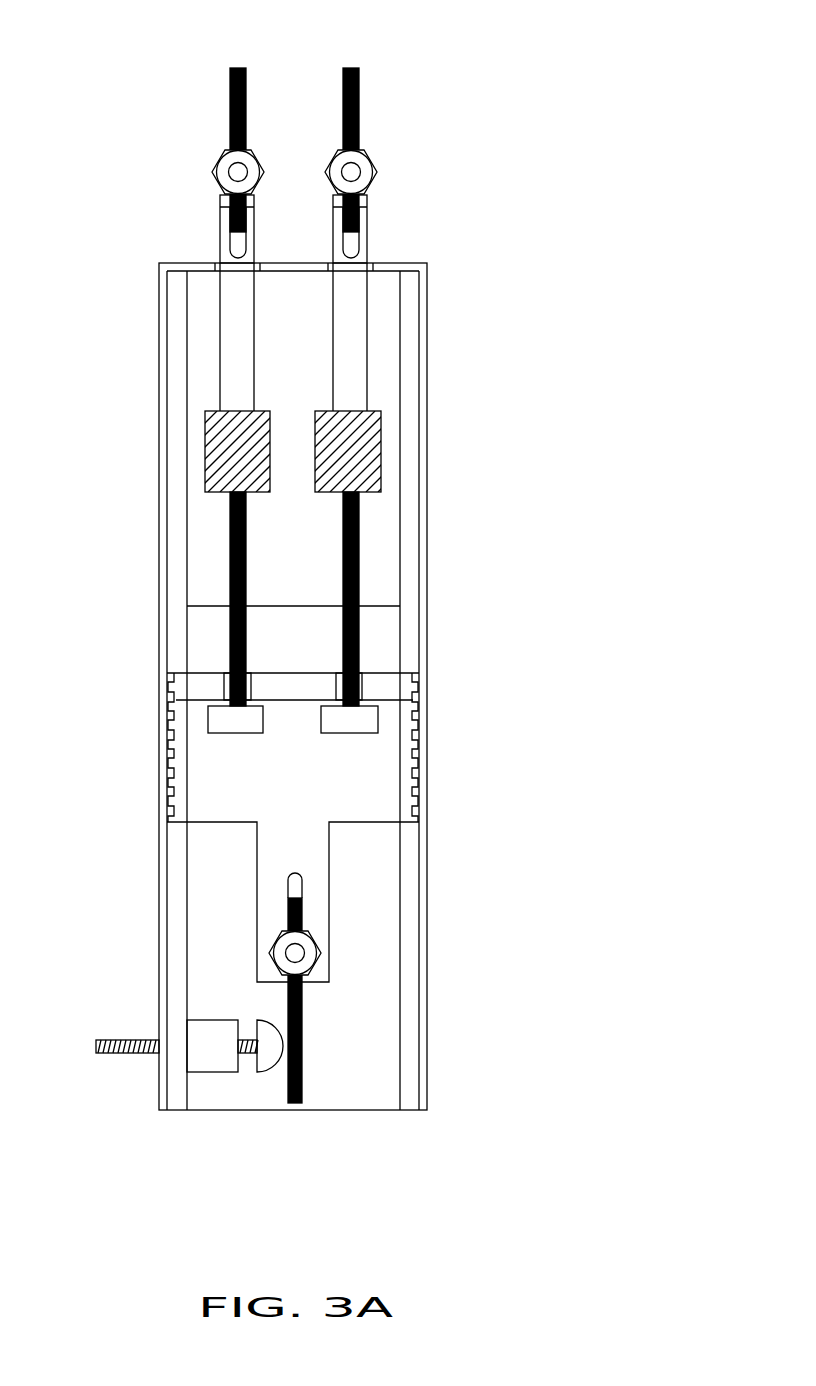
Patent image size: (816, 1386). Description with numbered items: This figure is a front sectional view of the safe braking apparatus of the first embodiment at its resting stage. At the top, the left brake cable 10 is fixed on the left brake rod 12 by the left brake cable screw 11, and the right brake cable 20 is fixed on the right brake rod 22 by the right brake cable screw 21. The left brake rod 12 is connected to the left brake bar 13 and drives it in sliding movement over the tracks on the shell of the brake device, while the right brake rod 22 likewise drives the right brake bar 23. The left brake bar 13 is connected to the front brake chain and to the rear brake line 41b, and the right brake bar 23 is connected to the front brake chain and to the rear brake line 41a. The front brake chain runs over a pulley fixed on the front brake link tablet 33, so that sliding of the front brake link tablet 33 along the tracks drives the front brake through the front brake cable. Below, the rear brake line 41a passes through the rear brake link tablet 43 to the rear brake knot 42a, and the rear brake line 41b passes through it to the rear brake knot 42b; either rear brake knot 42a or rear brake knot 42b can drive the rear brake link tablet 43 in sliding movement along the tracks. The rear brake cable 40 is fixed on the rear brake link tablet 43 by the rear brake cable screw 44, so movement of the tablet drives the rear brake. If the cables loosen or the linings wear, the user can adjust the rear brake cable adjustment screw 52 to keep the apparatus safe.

The left brake cable 10 is at (237, 66).
The left brake cable screw 11 is at (216, 160).
The left brake rod 12 is at (233, 315).
The left brake bar 13 is at (232, 443).
The right brake cable 20 is at (352, 66).
The right brake cable screw 21 is at (374, 160).
The right brake rod 22 is at (354, 318).
The right brake bar 23 is at (352, 442).
The front brake link tablet 33 is at (267, 633).
The rear brake cable 40 is at (292, 1105).
The rear brake line 41a is at (358, 553).
The rear brake line 41b is at (230, 552).
The rear brake knot 42a is at (369, 722).
The rear brake knot 42b is at (227, 722).
The rear brake link tablet 43 is at (380, 798).
The rear brake cable screw 44 is at (315, 960).
The rear brake cable adjustment screw 52 is at (92, 1045).